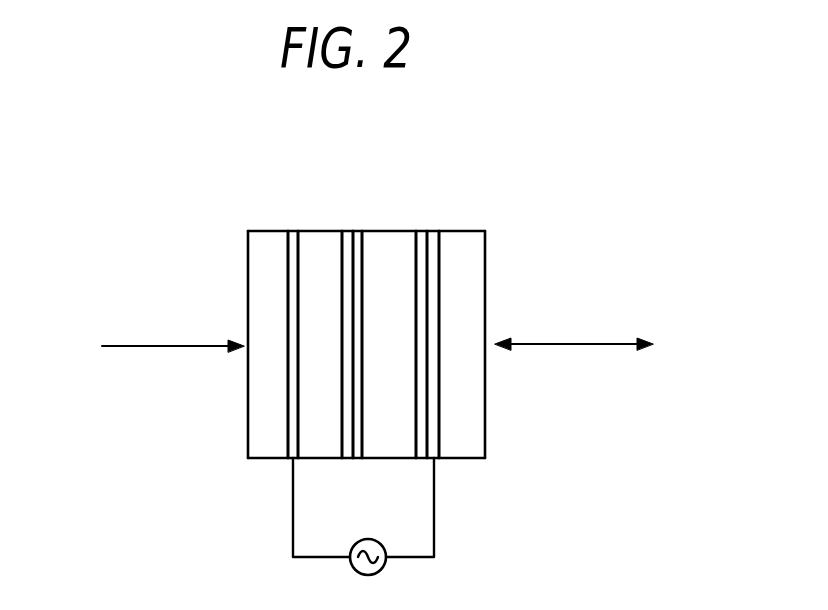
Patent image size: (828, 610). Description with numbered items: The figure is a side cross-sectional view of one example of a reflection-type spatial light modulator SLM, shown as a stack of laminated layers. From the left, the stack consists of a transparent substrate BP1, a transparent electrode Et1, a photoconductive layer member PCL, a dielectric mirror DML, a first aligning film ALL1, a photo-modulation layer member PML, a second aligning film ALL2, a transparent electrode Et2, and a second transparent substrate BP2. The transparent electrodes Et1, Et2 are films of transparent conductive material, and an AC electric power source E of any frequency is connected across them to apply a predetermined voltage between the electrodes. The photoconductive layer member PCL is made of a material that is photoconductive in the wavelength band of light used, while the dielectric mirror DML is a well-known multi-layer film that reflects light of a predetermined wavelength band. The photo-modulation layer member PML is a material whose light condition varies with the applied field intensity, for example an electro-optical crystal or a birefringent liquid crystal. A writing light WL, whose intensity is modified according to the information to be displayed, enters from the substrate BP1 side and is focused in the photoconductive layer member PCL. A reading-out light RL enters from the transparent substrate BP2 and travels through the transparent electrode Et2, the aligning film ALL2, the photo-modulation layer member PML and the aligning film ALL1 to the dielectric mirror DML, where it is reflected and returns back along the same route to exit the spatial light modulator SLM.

The spatial light modulator SLM is at (248, 393).
The transparent substrate BP1 is at (248, 283).
The transparent substrate BP2 is at (473, 283).
The transparent electrode Et1 is at (293, 232).
The transparent electrode Et2 is at (437, 232).
The photoconductive layer member PCL is at (312, 234).
The dielectric mirror DML is at (347, 233).
The aligning film ALL1 is at (358, 232).
The aligning film ALL2 is at (421, 233).
The photo-modulation layer member PML is at (388, 237).
The AC electric power source E is at (370, 538).
The writing light WL is at (152, 347).
The reading-out light RL is at (592, 347).